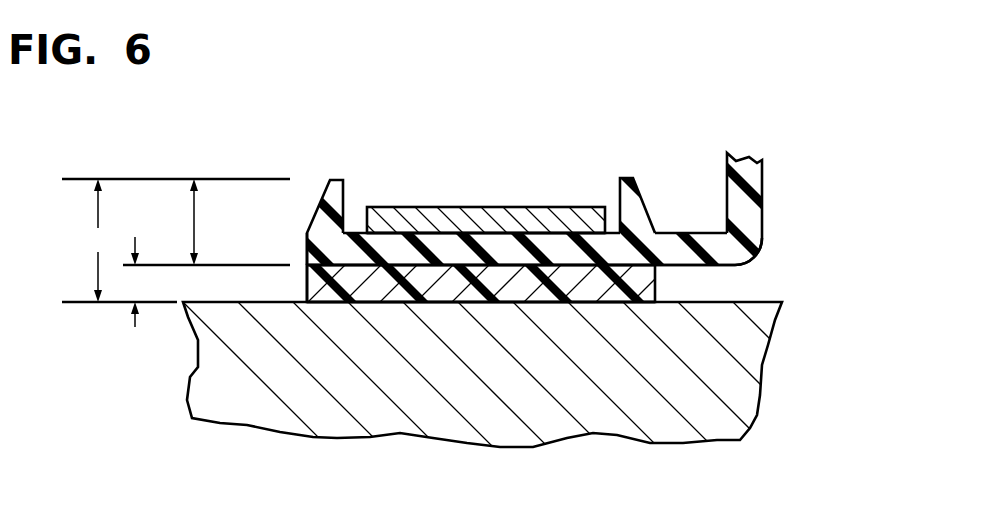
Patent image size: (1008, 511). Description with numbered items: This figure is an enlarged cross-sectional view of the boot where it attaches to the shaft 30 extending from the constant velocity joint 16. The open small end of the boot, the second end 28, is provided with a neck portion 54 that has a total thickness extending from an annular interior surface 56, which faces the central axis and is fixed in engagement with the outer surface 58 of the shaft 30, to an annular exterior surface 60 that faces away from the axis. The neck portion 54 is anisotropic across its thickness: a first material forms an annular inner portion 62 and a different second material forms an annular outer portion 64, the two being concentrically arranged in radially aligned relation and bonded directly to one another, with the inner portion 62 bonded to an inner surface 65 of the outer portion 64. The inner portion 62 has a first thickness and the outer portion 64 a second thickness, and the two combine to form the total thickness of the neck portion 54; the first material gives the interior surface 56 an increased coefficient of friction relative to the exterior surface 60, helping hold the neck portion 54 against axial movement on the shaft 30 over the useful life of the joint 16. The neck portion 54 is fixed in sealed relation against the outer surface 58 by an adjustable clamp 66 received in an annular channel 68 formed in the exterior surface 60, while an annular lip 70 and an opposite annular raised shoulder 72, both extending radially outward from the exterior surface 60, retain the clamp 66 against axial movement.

The constant velocity joint 16 is at (832, 276).
The second end 28 is at (303, 252).
The shaft 30 is at (774, 318).
The neck portion 54 is at (305, 113).
The annular interior surface 56 is at (628, 300).
The outer surface 58 is at (754, 298).
The annular exterior surface 60 is at (684, 224).
The annular inner portion 62 is at (640, 286).
The annular outer portion 64 is at (553, 248).
The inner surface 65 is at (570, 265).
The adjustable clamp 66 is at (435, 207).
The annular channel 68 is at (497, 232).
The annular lip 70 is at (344, 178).
The annular raised shoulder 72 is at (641, 188).